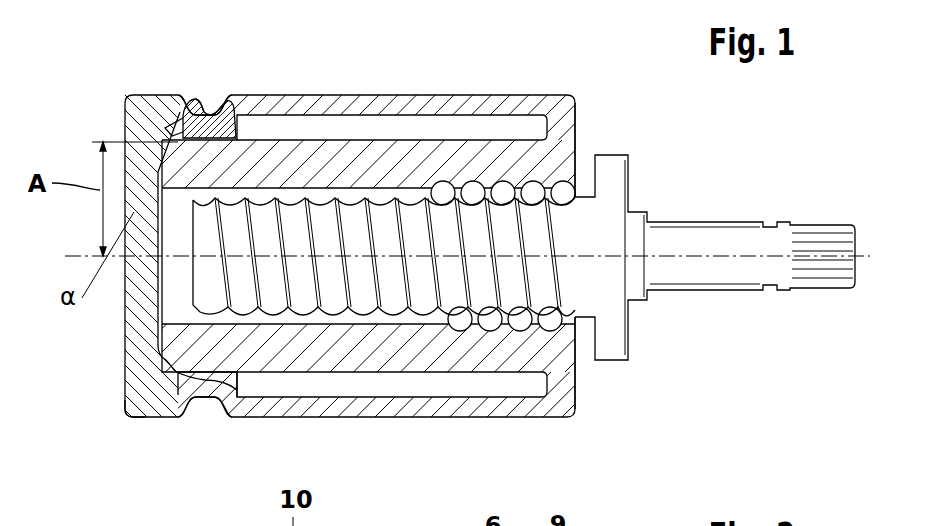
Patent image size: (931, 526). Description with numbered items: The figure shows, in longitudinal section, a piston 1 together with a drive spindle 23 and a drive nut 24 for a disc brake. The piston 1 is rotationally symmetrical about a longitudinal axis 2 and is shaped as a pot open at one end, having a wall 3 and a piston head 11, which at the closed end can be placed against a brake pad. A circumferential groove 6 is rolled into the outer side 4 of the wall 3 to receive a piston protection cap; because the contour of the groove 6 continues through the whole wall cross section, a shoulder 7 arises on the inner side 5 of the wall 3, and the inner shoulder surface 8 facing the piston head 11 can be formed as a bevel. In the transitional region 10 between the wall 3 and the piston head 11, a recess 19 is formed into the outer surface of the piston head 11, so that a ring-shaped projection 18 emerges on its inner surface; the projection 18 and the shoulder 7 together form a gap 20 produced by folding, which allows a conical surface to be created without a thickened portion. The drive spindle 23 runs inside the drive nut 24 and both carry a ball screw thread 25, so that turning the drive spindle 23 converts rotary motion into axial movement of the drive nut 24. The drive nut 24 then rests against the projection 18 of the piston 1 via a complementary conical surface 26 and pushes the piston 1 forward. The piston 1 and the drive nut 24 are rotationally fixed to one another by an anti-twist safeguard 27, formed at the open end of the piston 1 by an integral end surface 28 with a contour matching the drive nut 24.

The piston 1 is at (435, 429).
The longitudinal axis 2 is at (85, 258).
The wall 3 is at (367, 405).
The outer side 4 is at (256, 422).
The inner side 5 is at (313, 118).
The circumferential groove 6 is at (205, 110).
The shoulder 7 is at (230, 102).
The inner shoulder surface 8 is at (184, 100).
The transitional region 10 is at (126, 425).
The piston head 11 is at (140, 305).
The projection 18 is at (175, 417).
The recess 19 is at (137, 372).
The gap 20 is at (165, 128).
The drive spindle 23 is at (577, 293).
The drive nut 24 is at (482, 358).
The ball screw thread 25 is at (441, 165).
The conical surface 26 is at (150, 358).
The anti-twist safeguard 27 is at (584, 135).
The end surface 28 is at (575, 390).